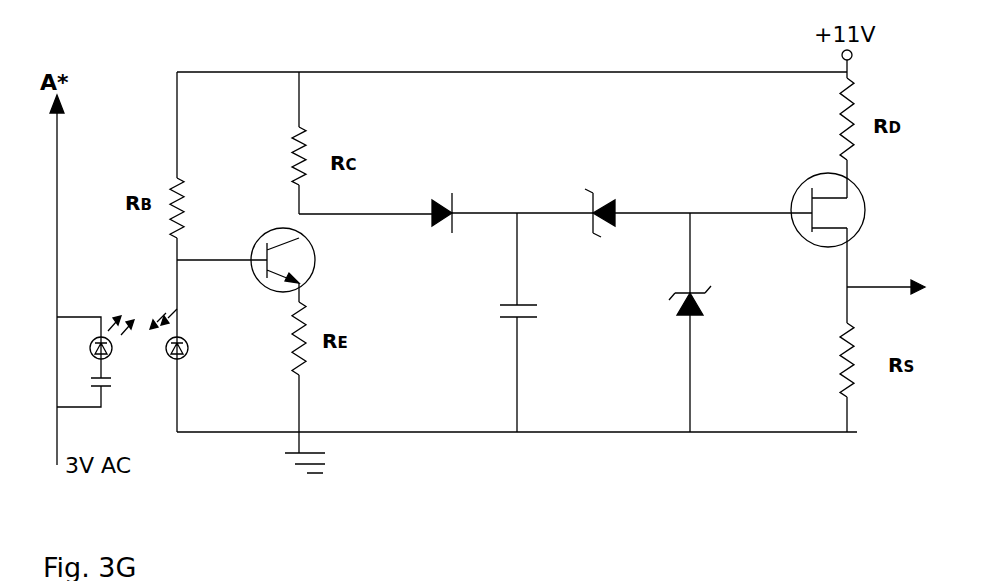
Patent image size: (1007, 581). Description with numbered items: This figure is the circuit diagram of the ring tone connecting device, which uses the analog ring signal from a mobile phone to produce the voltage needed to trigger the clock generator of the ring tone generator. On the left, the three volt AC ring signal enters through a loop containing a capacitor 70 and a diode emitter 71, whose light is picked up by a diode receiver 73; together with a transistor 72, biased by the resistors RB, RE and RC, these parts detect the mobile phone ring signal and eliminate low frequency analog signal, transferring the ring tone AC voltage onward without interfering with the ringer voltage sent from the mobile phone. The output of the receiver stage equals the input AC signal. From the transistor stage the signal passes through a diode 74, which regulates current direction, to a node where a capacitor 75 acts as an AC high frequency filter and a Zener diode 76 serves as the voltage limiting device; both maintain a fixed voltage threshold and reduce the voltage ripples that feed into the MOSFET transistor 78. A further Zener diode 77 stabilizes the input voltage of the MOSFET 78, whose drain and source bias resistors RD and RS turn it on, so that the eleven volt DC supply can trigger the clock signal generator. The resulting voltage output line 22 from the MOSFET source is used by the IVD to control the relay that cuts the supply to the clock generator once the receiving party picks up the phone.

The voltage output line 22 is at (894, 303).
The capacitor 70 is at (100, 367).
The diode emitter 71 is at (112, 322).
The transistor 72 is at (271, 265).
The diode receiver 73 is at (192, 336).
The diode 74 is at (453, 199).
The capacitor 75 is at (542, 322).
The Zener diode 76 is at (607, 201).
The Zener diode 77 is at (716, 322).
The MOSFET transistor 78 is at (850, 210).